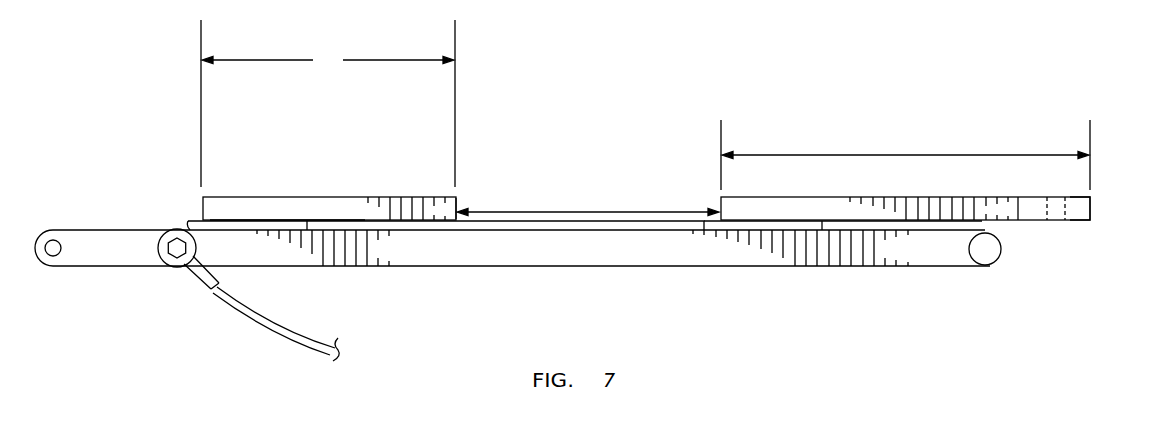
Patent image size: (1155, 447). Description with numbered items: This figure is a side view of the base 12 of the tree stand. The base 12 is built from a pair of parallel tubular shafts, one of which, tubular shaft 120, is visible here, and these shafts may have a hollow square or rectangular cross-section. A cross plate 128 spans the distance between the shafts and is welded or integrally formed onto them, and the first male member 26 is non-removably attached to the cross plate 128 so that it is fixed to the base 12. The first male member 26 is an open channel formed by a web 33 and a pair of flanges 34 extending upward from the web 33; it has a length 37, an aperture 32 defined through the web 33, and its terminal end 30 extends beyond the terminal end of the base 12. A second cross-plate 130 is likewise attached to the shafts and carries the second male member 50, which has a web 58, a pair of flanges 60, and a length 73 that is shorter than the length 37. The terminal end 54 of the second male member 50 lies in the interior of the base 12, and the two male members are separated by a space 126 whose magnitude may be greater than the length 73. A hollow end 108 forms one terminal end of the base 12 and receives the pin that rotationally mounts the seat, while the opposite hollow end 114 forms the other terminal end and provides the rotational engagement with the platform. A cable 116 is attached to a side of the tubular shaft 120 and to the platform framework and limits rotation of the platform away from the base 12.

The base 12 is at (664, 98).
The first male member 26 is at (878, 207).
The terminal end 30 is at (1092, 205).
The aperture 32 is at (1055, 222).
The web 33 is at (1018, 222).
The flanges 34 is at (957, 207).
The length 37 is at (798, 155).
The second male member 50 is at (252, 203).
The terminal end 54 is at (458, 203).
The web 58 is at (368, 220).
The flanges 60 is at (328, 210).
The length 73 is at (328, 103).
The hollow end 108 is at (55, 248).
The hollow end 114 is at (988, 258).
The cable 116 is at (267, 335).
The tubular shaft 120 is at (593, 228).
The space 126 is at (545, 210).
The cross plate 128 is at (807, 227).
The cross-plate 130 is at (212, 228).